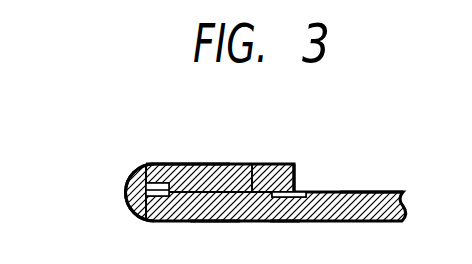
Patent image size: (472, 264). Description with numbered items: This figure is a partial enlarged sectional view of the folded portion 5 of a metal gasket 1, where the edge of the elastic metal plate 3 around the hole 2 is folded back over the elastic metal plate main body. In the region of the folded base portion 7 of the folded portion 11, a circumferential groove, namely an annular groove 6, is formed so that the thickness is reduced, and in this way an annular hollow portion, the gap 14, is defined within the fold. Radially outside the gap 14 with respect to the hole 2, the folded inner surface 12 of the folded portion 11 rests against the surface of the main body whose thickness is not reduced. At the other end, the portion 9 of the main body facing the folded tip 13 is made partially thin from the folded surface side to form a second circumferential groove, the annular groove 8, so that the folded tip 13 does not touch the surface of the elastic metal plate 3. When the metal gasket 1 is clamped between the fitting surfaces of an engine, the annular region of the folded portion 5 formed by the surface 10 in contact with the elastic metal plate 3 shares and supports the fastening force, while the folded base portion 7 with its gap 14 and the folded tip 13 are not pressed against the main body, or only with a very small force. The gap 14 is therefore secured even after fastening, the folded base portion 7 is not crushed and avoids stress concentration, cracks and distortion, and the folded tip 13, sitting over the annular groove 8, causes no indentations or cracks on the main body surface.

The metal gasket 1 is at (350, 148).
The hole 2 is at (129, 204).
The elastic metal plate 3 is at (383, 192).
The folded portion 5 is at (178, 164).
The annular groove 6 is at (153, 221).
The folded base portion 7 is at (133, 184).
The annular groove 8 is at (310, 221).
The portion facing the folded tip 9 is at (287, 221).
The contact surface 10 is at (214, 221).
The folded portion 11 is at (210, 164).
The folded inner surface 12 is at (258, 164).
The folded tip 13 is at (302, 172).
The gap 14 is at (152, 164).